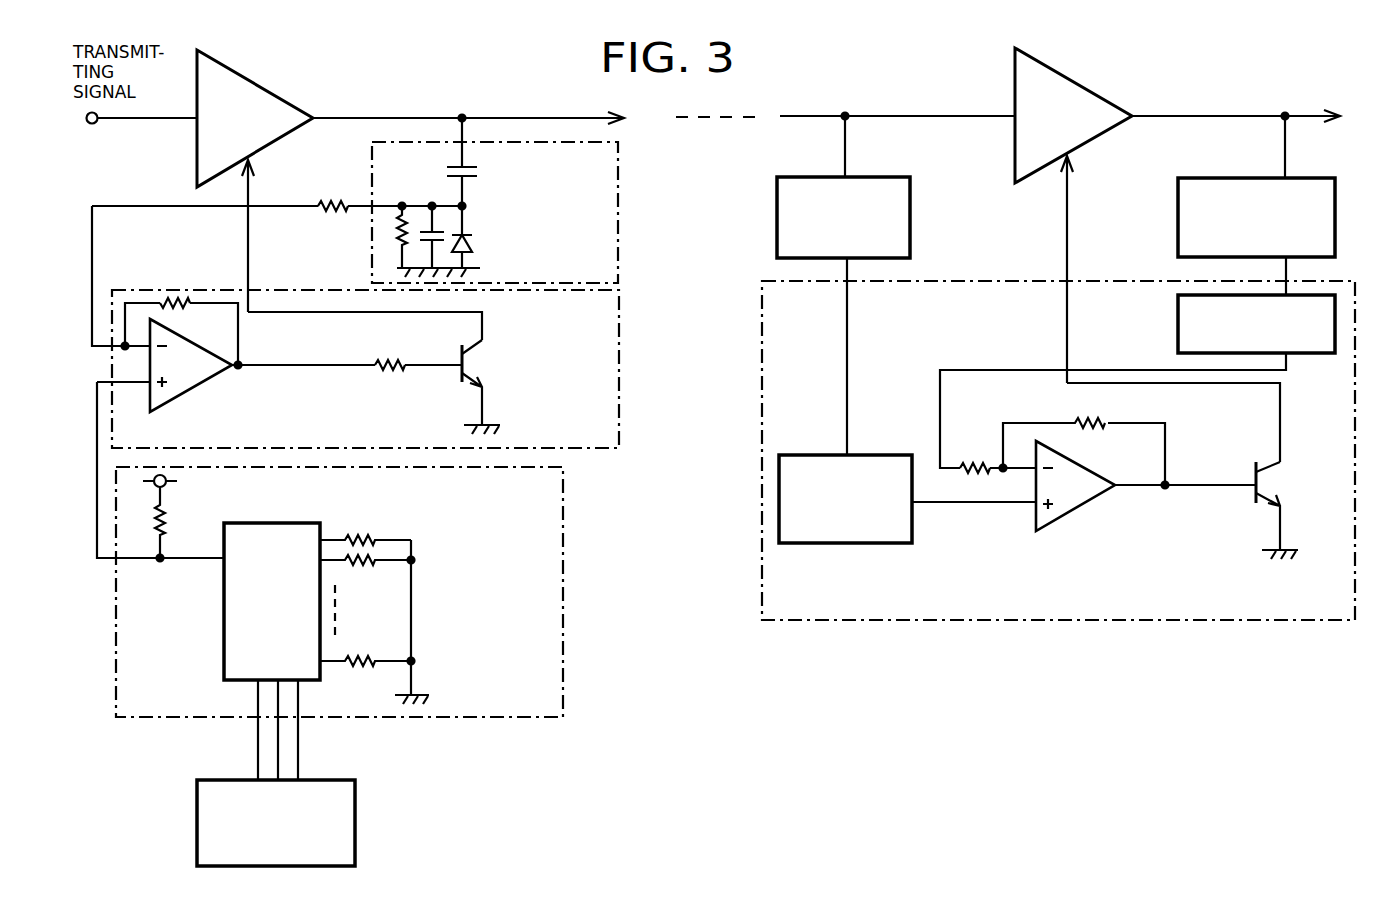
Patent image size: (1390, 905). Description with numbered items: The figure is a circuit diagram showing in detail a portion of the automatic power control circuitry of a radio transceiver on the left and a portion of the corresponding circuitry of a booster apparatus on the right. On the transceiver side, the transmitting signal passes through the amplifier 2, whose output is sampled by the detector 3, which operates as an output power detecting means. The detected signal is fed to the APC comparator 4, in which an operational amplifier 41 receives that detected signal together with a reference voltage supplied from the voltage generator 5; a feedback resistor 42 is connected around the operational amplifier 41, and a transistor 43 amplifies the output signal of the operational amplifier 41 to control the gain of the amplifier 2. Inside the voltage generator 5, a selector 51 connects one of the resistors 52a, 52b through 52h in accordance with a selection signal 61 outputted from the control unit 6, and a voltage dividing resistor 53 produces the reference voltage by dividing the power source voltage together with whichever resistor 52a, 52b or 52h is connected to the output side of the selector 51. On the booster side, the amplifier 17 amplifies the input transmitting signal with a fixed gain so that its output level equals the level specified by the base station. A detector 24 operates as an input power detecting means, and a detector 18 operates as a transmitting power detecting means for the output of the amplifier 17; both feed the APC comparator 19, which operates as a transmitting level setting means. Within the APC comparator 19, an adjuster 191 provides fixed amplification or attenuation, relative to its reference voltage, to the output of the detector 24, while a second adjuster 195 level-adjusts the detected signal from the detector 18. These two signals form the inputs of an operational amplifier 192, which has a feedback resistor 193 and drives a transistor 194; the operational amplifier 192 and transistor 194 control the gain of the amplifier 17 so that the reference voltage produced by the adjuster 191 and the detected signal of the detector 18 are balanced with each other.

The amplifier 2 is at (292, 102).
The detector 3 is at (621, 212).
The APC comparator 4 is at (390, 344).
The voltage generator 5 is at (368, 592).
The control unit 6 is at (357, 820).
The amplifier 17 is at (1105, 98).
The detector 18 is at (1230, 178).
The APC comparator 19 is at (1058, 479).
The detector 24 is at (910, 178).
The operational amplifier 41 is at (205, 383).
The feedback resistor 42 is at (178, 292).
The transistor 43 is at (455, 380).
The selector 51 is at (286, 522).
The resistor 52a is at (368, 535).
The resistor 52b is at (362, 566).
The resistor 52h is at (364, 670).
The voltage dividing resistor 53 is at (165, 522).
The selection signal 61 is at (280, 750).
The adjuster 191 is at (880, 545).
The operational amplifier 192 is at (1083, 508).
The feedback resistor 193 is at (1108, 420).
The transistor 194 is at (1258, 460).
The adjuster 195 is at (1178, 325).